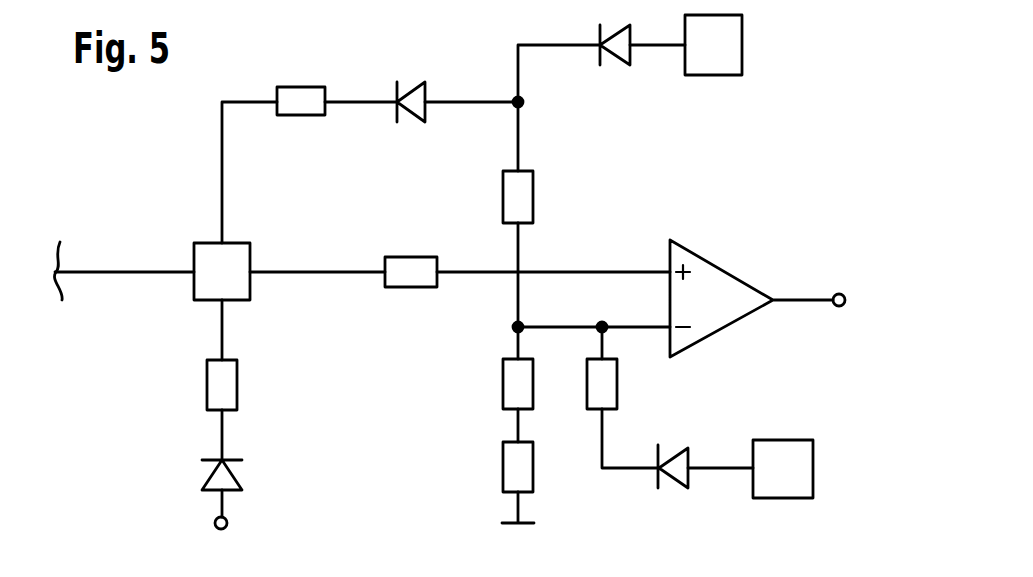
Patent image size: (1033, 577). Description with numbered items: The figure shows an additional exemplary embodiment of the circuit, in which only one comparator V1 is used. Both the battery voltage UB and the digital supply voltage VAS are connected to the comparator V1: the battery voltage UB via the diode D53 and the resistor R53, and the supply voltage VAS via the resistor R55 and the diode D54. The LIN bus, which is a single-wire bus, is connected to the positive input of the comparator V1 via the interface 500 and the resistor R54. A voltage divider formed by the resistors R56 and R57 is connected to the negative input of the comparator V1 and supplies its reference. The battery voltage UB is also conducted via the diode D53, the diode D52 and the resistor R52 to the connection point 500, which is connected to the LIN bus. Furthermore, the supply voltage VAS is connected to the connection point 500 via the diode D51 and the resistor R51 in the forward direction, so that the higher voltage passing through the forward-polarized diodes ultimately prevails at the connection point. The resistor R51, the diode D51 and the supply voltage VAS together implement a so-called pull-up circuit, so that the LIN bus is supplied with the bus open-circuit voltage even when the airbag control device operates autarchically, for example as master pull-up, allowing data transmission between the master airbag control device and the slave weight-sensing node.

The interface 500 is at (210, 248).
The LIN bus LIN is at (97, 272).
The resistor R51 is at (207, 385).
The resistor R52 is at (301, 115).
The resistor R53 is at (503, 197).
The resistor R54 is at (407, 288).
The resistor R55 is at (617, 383).
The resistor R56 is at (503, 380).
The resistor R57 is at (503, 465).
The diode D51 is at (212, 475).
The diode D52 is at (415, 87).
The diode D53 is at (613, 62).
The diode D54 is at (668, 482).
The comparator V1 is at (720, 267).
The battery voltage UB is at (737, 42).
The digital supply voltage VAS is at (215, 523).